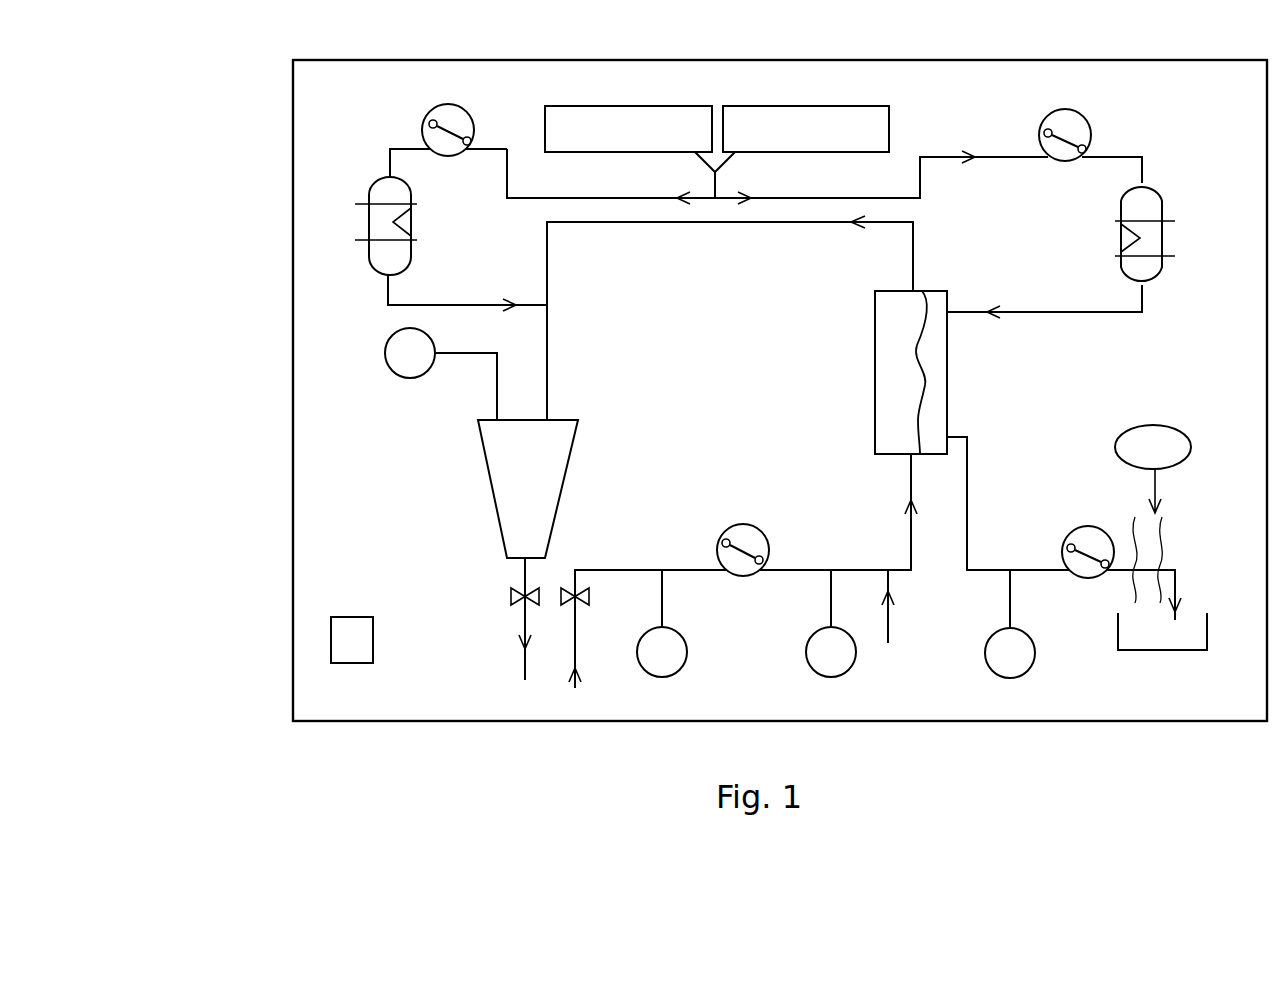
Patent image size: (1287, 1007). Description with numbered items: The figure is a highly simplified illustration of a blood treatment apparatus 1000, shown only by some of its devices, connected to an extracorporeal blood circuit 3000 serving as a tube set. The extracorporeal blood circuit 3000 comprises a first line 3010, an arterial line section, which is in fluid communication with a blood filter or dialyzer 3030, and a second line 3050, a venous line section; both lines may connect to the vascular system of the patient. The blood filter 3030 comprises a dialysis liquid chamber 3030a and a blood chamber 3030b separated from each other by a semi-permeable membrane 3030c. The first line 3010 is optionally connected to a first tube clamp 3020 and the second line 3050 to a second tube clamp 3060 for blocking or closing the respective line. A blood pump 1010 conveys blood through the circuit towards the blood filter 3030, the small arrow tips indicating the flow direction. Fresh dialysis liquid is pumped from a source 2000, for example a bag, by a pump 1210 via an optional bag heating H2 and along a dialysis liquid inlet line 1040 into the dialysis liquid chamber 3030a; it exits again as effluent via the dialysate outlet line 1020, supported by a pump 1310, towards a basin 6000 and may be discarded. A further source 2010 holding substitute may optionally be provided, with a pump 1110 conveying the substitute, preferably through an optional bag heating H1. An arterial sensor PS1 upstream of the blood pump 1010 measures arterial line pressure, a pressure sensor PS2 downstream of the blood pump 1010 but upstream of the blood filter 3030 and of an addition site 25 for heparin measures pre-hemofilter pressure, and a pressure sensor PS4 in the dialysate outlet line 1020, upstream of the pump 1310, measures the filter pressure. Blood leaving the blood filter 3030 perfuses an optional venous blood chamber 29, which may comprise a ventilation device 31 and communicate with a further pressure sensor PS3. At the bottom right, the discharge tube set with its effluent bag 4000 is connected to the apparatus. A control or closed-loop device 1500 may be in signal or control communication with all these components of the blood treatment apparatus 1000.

The blood treatment apparatus 1000 is at (293, 367).
The pump for substitute 1110 is at (458, 106).
The pump for dialysis liquid 1210 is at (1090, 133).
The further source having substitute 2010 is at (628, 129).
The source 2000 is at (792, 152).
The second line 3050 is at (620, 222).
The extracorporeal blood circuit 3000 is at (730, 318).
The blood filter or dialyzer 3030 is at (862, 318).
The dialysis liquid chamber 3030a is at (937, 395).
The blood chamber 3030b is at (893, 422).
The semi-permeable membrane 3030c is at (921, 350).
The dialysis liquid inlet line 1040 is at (1142, 312).
The dialysate outlet line 1020 is at (967, 525).
The first line 3010 is at (612, 568).
The blood pump 1010 is at (765, 533).
The pump for the effluent 1310 is at (1093, 527).
The addition site for heparin 25 is at (892, 624).
The ventilation device 31 is at (495, 400).
The venous blood chamber 29 is at (507, 467).
The second tube clamp 3060 is at (512, 595).
The first tube clamp 3020 is at (586, 588).
The control or closed-loop device 1500 is at (352, 653).
The effluent bag 4000 is at (1153, 514).
The basin 6000 is at (1168, 642).
The bag heating H1 is at (441, 244).
The bag heating with a bag H2 is at (1157, 234).
The arterial sensor PS1 is at (662, 638).
The pressure sensor PS2 is at (831, 638).
The pressure sensor PS3 is at (409, 366).
The pressure sensor PS4 is at (1010, 639).